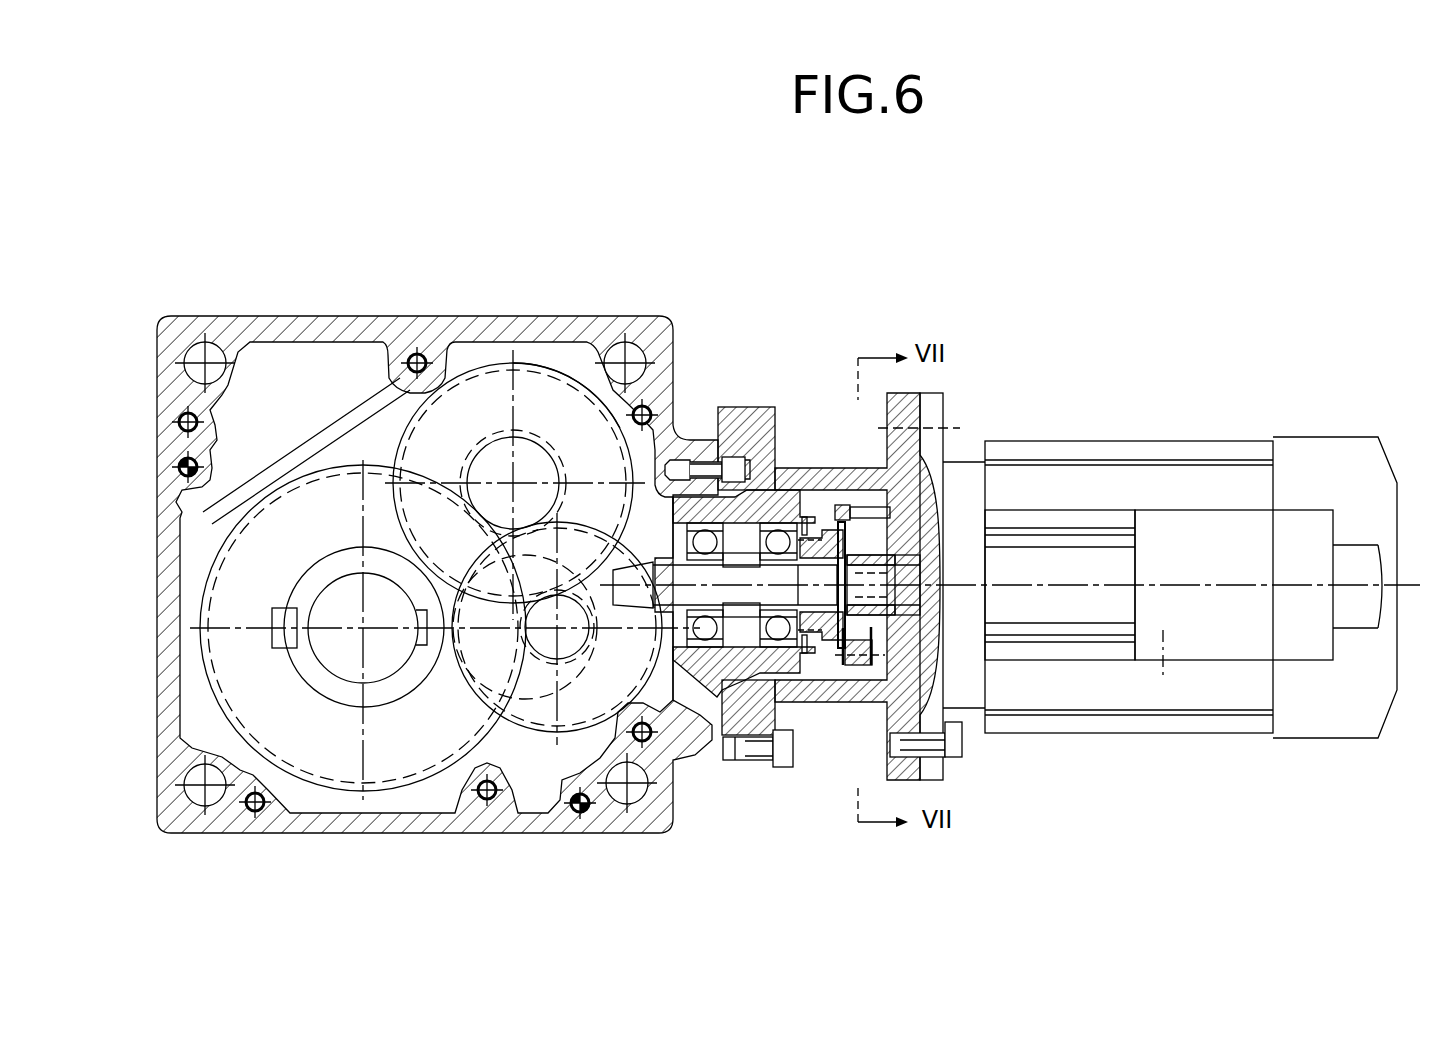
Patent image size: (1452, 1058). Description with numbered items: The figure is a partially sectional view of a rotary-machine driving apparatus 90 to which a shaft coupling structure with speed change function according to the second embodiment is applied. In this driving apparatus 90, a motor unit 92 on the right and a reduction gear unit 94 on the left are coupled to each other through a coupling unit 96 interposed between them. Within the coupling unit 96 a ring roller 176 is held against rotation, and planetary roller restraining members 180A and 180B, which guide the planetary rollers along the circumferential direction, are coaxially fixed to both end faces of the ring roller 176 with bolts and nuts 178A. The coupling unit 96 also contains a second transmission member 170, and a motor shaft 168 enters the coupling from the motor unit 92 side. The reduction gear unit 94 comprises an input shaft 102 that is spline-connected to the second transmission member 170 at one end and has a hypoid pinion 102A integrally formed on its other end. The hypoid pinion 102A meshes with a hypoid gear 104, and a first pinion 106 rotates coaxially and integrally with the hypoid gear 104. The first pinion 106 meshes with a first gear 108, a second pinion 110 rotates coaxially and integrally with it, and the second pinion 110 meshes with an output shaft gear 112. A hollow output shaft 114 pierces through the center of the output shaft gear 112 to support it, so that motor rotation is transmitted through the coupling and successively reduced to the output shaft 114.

The rotary-machine driving apparatus 90 is at (1020, 276).
The motor unit 92 is at (1168, 434).
The reduction gear unit 94 is at (568, 224).
The coupling unit 96 is at (769, 378).
The input shaft 102 is at (742, 612).
The hypoid pinion 102A is at (637, 606).
The hypoid gear 104 is at (590, 713).
The first pinion 106 is at (490, 705).
The first gear 108 is at (565, 372).
The second pinion 110 is at (484, 455).
The output shaft gear 112 is at (332, 790).
The output shaft 114 is at (333, 563).
The motor shaft 168 is at (880, 612).
The second transmission member 170 is at (829, 613).
The ring roller 176 is at (828, 522).
The nut 178A is at (848, 536).
The planetary roller restraining member 180A is at (860, 545).
The planetary roller restraining member 180B is at (818, 522).